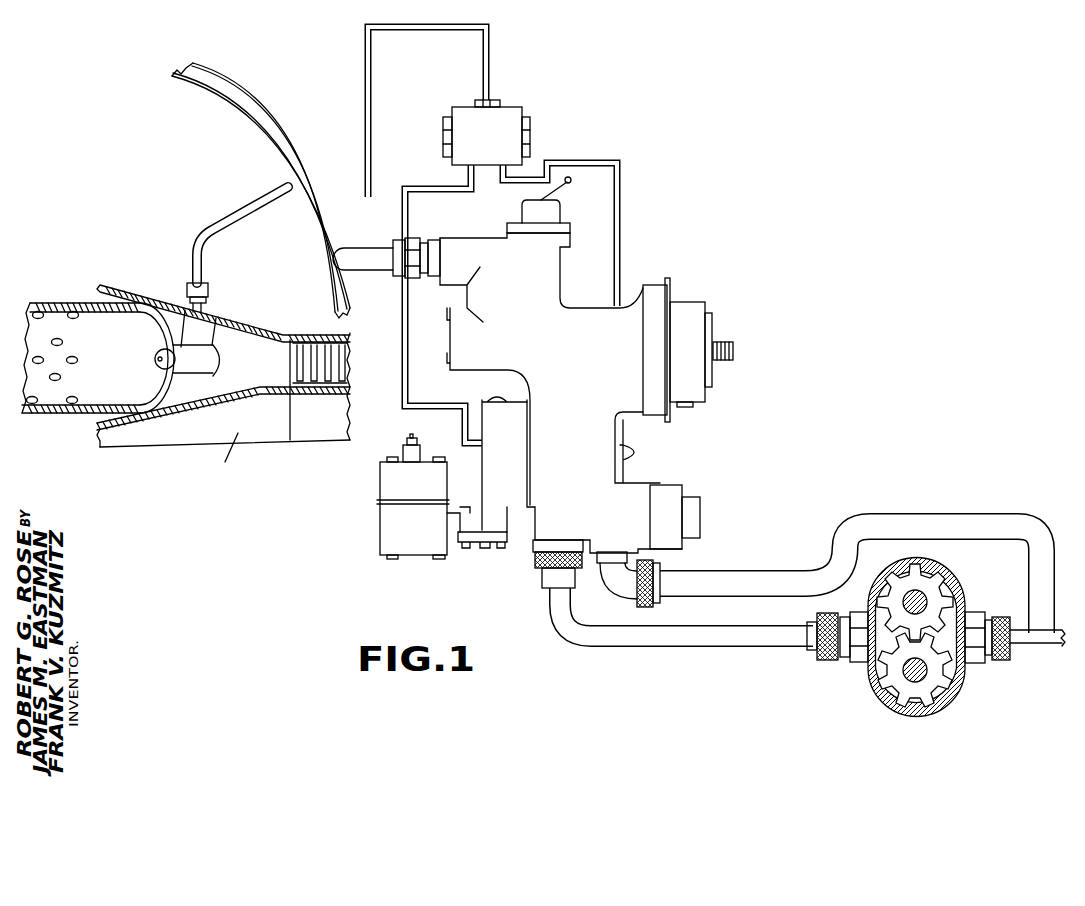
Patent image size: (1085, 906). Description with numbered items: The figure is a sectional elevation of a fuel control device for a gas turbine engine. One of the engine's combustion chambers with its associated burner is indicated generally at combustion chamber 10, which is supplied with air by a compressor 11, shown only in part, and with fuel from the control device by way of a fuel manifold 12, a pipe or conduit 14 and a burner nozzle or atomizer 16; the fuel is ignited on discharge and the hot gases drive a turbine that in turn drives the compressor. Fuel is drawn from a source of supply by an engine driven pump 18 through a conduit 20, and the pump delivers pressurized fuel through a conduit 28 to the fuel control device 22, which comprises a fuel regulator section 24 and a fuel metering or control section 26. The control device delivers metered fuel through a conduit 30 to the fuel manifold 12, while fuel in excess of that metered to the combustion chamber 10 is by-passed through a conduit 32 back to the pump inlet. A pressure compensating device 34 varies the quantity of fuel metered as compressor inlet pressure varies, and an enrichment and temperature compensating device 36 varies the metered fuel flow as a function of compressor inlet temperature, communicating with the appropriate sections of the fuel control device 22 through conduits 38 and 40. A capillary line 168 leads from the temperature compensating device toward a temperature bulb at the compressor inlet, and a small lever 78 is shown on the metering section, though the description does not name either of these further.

The combustion chamber 10 is at (124, 277).
The compressor 11 is at (317, 391).
The fuel manifold 12 is at (237, 97).
The pipe or conduit 14 is at (242, 215).
The burner nozzle or atomizer 16 is at (214, 377).
The capillary line to temperature bulb at compressor inlet 168 is at (366, 101).
The engine driven pump 18 is at (920, 711).
The conduit 20 is at (1043, 645).
The fuel control device 22 is at (673, 419).
The fuel regulator section 24 is at (594, 507).
The fuel metering or control section 26 is at (590, 370).
The conduit 28 is at (693, 641).
The conduit 30 is at (362, 250).
The conduit 32 is at (872, 527).
The pressure compensating device 34 is at (483, 484).
The enrichment and temperature compensating device 36 is at (512, 141).
The conduit 38 is at (621, 232).
The conduit 40 is at (403, 326).
The adjustment lever 78 is at (563, 192).